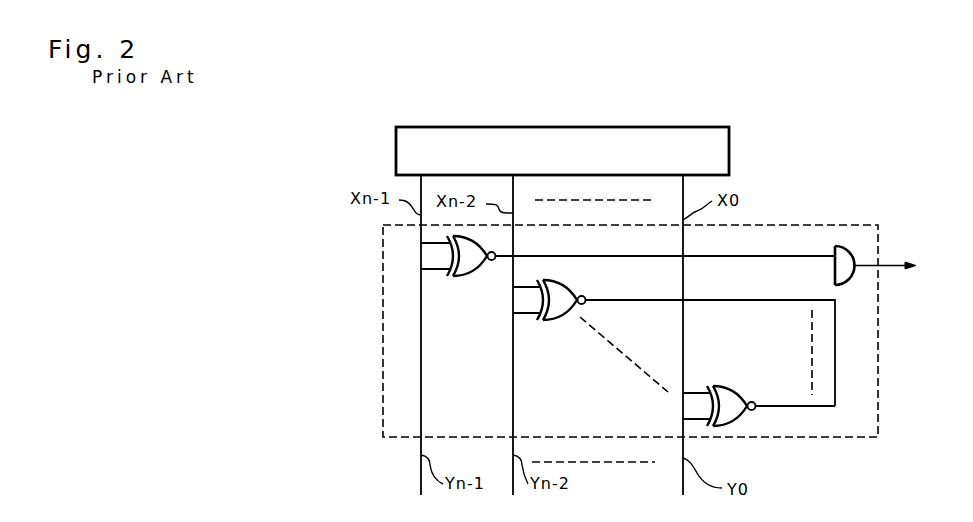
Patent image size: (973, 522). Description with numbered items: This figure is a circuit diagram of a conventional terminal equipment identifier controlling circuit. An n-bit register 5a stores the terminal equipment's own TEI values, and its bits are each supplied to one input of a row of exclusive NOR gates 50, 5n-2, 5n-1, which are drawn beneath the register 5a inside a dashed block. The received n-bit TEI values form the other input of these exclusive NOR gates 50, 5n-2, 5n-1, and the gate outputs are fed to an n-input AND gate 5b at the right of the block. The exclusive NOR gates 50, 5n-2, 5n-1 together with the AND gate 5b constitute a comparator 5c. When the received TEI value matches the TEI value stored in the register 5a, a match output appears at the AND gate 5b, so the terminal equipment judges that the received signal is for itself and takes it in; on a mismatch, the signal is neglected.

The n-bit register 5a is at (624, 127).
The AND gate 5b is at (850, 250).
The comparator 5c is at (669, 352).
The exclusive NOR gate 5n-1 is at (458, 270).
The exclusive NOR gate 5n-2 is at (550, 319).
The exclusive NOR gate 50 is at (737, 420).